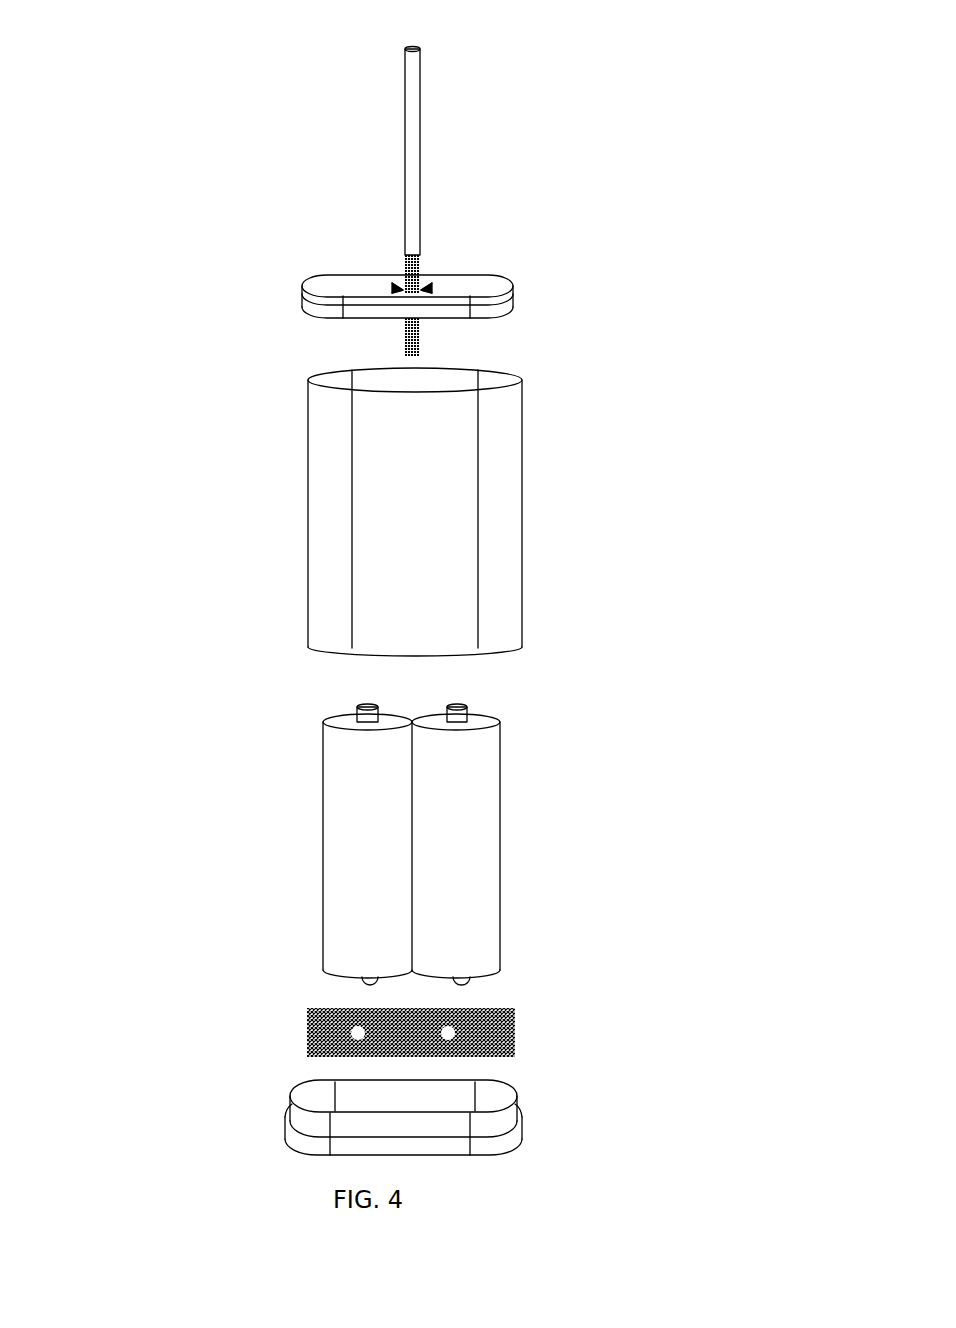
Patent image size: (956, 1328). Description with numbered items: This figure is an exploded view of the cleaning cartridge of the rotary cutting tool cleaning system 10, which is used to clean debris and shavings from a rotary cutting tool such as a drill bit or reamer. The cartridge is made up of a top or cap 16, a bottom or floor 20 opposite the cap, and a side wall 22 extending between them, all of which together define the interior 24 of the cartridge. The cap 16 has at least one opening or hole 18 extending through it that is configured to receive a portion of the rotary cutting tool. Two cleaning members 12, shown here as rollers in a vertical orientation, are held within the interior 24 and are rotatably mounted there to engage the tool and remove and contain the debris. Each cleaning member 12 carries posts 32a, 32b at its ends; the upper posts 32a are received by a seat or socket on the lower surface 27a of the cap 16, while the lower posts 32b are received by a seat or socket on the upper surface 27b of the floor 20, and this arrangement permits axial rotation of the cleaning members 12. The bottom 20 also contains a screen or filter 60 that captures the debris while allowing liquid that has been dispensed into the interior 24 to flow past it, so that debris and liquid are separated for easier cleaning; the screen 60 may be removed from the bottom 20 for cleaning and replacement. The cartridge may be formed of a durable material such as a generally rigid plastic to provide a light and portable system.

The rotary cutting tool cleaning system 10 is at (152, 203).
The cleaning member 12 is at (490, 801).
The top or cap 16 is at (512, 297).
The opening or hole 18 is at (398, 292).
The bottom or floor 20 is at (420, 137).
The side wall 22 is at (520, 465).
The interior 24 is at (493, 375).
The lower surface 27a is at (487, 282).
The upper surface 27b is at (495, 1155).
The post 32a is at (367, 718).
The post 32b is at (367, 982).
The screen or filter 60 is at (493, 1017).